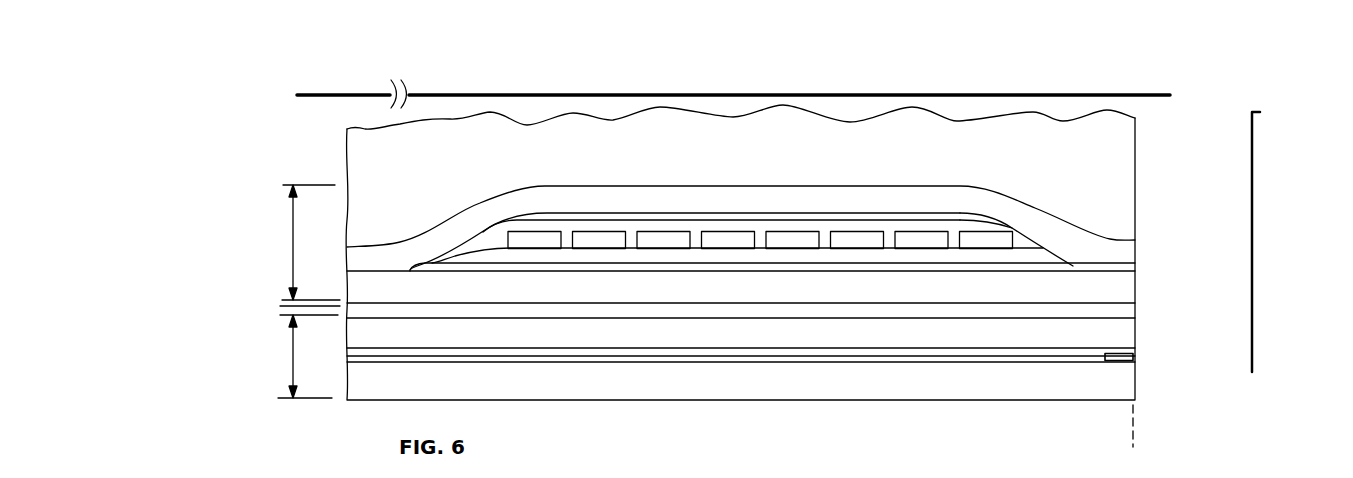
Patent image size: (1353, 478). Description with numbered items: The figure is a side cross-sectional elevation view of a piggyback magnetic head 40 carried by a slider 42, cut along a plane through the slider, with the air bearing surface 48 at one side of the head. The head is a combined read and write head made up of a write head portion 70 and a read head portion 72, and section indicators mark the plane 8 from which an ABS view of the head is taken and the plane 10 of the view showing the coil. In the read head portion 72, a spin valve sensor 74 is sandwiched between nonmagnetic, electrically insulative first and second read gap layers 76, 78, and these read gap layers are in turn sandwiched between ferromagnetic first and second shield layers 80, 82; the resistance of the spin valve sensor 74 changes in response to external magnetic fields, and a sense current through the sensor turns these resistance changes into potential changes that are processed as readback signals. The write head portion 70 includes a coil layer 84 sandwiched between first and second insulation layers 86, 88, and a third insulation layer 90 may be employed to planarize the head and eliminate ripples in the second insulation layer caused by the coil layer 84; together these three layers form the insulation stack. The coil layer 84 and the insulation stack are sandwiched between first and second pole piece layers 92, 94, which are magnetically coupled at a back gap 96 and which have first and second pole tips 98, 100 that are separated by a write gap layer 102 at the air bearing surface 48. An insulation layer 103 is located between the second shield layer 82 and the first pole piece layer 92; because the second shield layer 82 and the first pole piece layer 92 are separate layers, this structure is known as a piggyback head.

The ABS view plane 8 is at (1308, 362).
The section plane of coil layer view 10 is at (303, 84).
The magnetic head 40 is at (324, 135).
The slider 42 is at (1120, 145).
The air bearing surface 48 is at (1133, 449).
The write head portion 70 is at (292, 250).
The read head portion 72 is at (292, 362).
The spin valve sensor 74 is at (1130, 356).
The first read gap layer 76 is at (805, 363).
The second read gap layer 78 is at (775, 348).
The first shield layer 80 is at (905, 385).
The second shield layer 82 is at (1007, 337).
The coil layer 84 is at (723, 237).
The first insulation layer 86 is at (698, 258).
The second insulation layer 88 is at (1026, 242).
The third insulation layer 90 is at (575, 217).
The first pole piece layer 92 is at (1055, 292).
The second pole piece layer 94 is at (921, 198).
The back gap 96 is at (386, 270).
The first pole tip 98 is at (1133, 296).
The second pole tip 100 is at (1128, 249).
The write gap layer 102 is at (1130, 270).
The insulation layer 103 is at (963, 312).